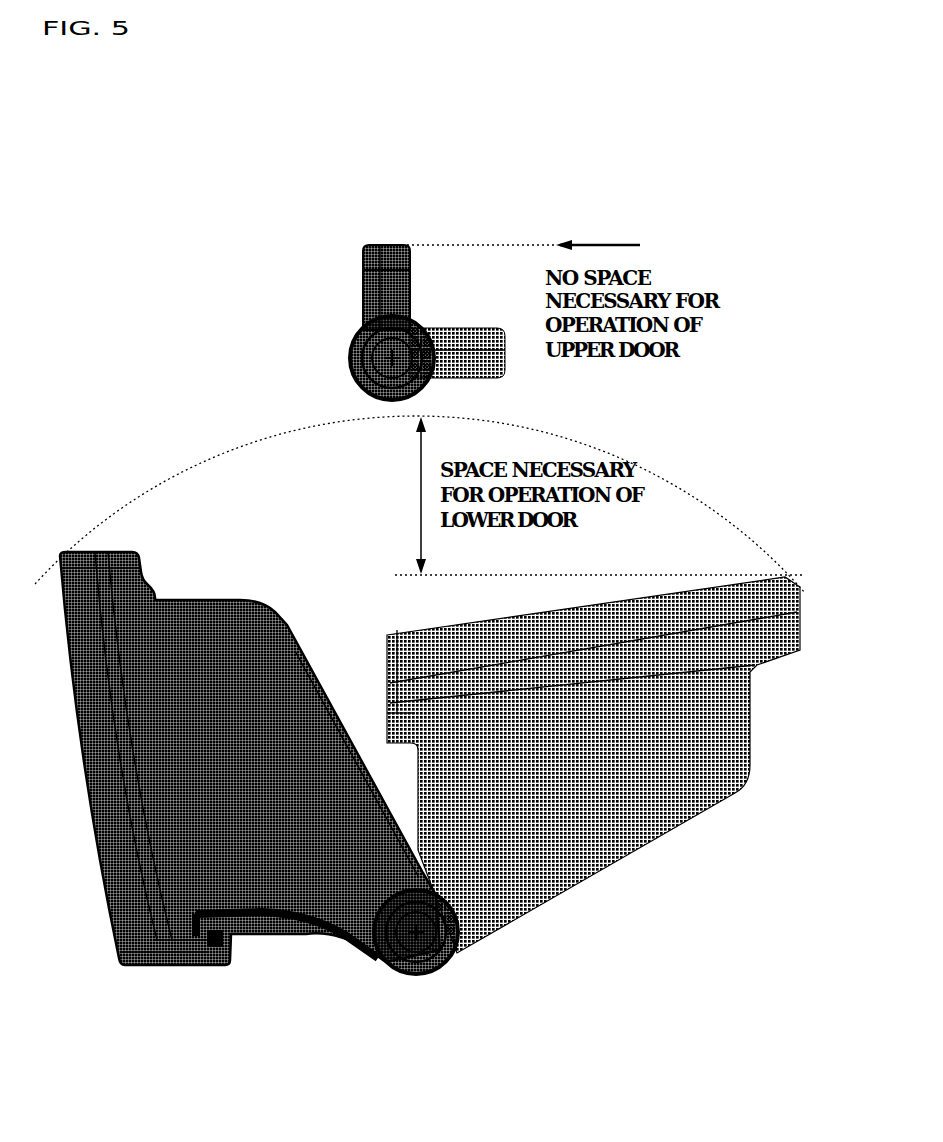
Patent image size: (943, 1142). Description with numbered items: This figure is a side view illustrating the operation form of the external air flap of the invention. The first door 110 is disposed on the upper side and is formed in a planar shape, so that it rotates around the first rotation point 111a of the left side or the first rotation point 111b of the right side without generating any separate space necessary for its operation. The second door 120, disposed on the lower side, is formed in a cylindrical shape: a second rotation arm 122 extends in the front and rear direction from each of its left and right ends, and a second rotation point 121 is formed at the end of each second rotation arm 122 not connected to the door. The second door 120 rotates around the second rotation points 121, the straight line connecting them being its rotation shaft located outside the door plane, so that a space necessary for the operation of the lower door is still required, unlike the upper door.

The first door 110 is at (365, 354).
The first rotation point of the left side 111a is at (329, 389).
The first rotation point of the right side 111b is at (353, 365).
The second door 120 is at (422, 808).
The second rotation point 121 is at (418, 968).
The second rotation arm 122 is at (287, 873).